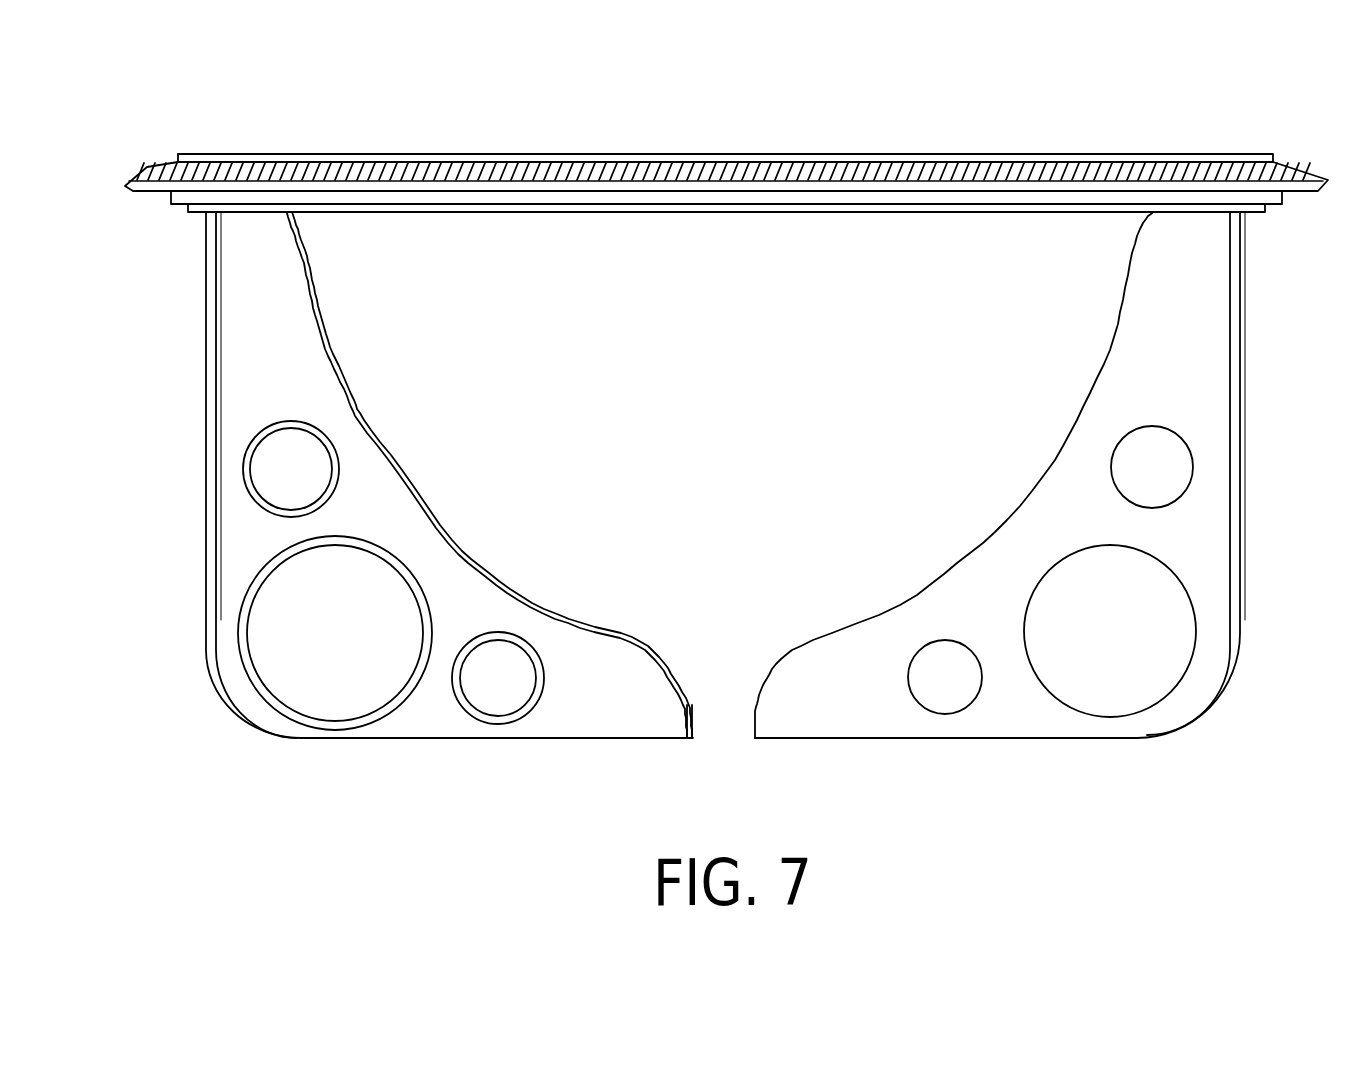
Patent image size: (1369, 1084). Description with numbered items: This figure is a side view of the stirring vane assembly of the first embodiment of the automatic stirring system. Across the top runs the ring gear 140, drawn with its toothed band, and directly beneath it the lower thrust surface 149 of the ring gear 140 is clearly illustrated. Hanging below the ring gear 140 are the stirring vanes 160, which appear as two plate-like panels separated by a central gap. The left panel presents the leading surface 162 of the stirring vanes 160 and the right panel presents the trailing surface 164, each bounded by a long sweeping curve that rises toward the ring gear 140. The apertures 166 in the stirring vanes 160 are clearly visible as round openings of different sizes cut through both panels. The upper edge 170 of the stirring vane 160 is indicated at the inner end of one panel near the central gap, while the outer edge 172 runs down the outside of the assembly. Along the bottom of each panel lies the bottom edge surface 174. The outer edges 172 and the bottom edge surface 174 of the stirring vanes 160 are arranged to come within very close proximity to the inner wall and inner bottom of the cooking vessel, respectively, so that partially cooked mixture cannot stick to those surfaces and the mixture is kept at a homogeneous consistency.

The ring gear 140 is at (146, 167).
The lower thrust surface 149 is at (142, 196).
The stirring vanes 160 is at (428, 693).
The leading surface 162 is at (403, 528).
The trailing surface 164 is at (1088, 525).
The apertures 166 is at (268, 570).
The upper edge 170 is at (686, 704).
The outer edge 172 is at (1240, 637).
The bottom edge surface 174 is at (600, 739).